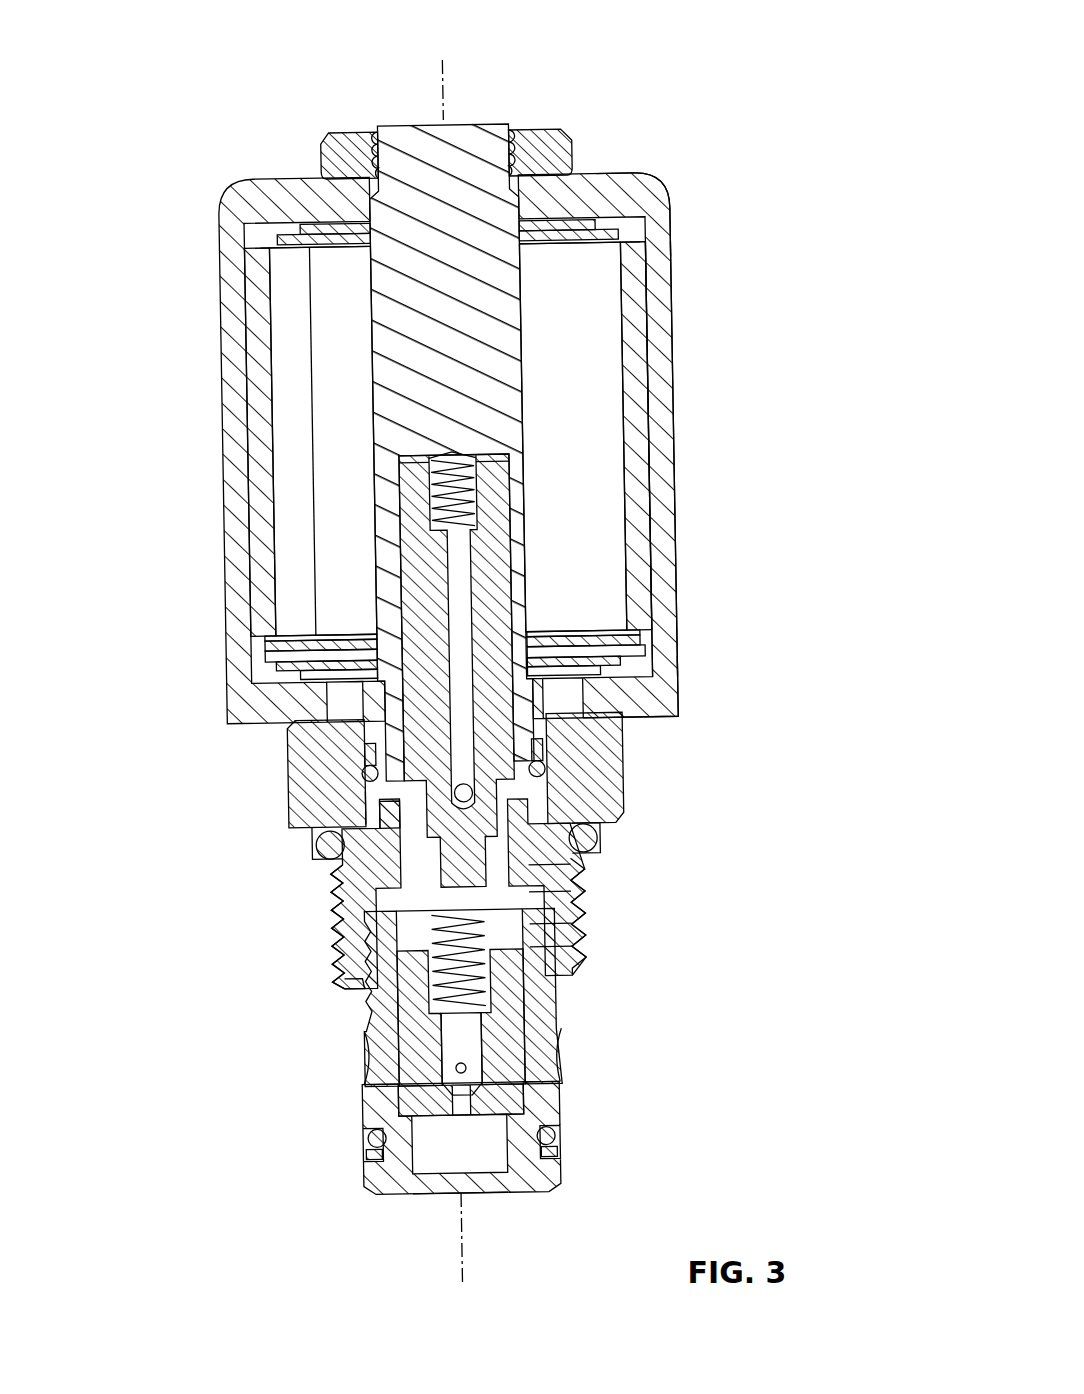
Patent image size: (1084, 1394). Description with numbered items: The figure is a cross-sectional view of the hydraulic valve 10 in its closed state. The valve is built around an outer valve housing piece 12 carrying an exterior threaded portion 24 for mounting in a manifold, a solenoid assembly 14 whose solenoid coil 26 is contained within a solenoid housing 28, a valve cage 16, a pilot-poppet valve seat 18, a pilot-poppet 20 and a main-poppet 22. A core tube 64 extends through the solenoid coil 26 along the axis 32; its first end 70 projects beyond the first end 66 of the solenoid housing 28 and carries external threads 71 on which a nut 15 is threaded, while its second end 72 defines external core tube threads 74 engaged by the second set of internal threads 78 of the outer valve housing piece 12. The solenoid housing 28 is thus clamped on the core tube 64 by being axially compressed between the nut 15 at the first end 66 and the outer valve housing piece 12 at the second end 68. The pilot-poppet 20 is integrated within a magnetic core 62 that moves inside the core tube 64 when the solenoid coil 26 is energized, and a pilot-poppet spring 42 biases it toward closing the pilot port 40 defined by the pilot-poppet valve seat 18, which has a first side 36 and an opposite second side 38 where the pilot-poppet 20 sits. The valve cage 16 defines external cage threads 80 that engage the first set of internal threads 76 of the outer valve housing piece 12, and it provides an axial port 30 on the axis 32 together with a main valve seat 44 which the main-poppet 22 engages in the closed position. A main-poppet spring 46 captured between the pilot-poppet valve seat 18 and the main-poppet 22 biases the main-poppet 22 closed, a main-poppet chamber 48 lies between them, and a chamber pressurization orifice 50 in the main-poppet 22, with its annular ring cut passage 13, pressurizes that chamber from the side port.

The hydraulic valve 10 is at (521, 92).
The outer valve housing piece 12 is at (630, 742).
The annular ring cut passage 13 is at (564, 1062).
The solenoid assembly 14 is at (680, 218).
The nut 15 is at (563, 118).
The valve cage 16 is at (353, 1043).
The pilot-poppet valve seat 18 is at (390, 898).
The pilot-poppet 20 is at (507, 793).
The main-poppet 22 is at (545, 1000).
The exterior threaded portion 24 is at (325, 948).
The solenoid coil 26 is at (562, 400).
The solenoid housing 28 is at (673, 317).
The axial port 30 is at (444, 1200).
The axis 32 is at (463, 1270).
The first side 36 is at (535, 925).
The second side 38 is at (520, 878).
The pilot port 40 is at (520, 895).
The pilot-poppet spring 42 is at (482, 508).
The main valve seat 44 is at (492, 1115).
The main-poppet spring 46 is at (455, 987).
The main-poppet chamber 48 is at (540, 948).
The chamber pressurization orifice 50 is at (557, 1110).
The magnetic core 62 is at (498, 625).
The core tube 64 is at (522, 320).
The first end 66 is at (660, 173).
The second end 68 is at (690, 705).
The first end 70 is at (387, 118).
The external threads 71 is at (352, 152).
The second end 72 is at (372, 876).
The external core tube threads 74 is at (374, 815).
The first set of internal threads 76 is at (366, 985).
The second set of internal threads 78 is at (365, 765).
The external cage threads 80 is at (545, 965).